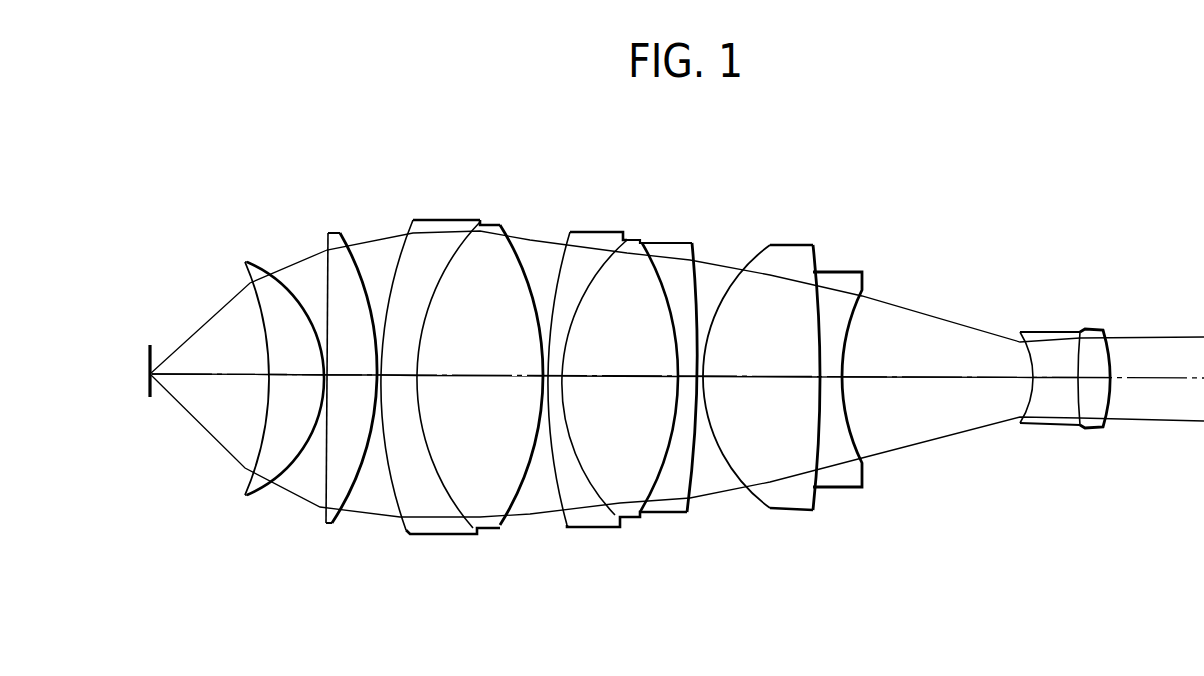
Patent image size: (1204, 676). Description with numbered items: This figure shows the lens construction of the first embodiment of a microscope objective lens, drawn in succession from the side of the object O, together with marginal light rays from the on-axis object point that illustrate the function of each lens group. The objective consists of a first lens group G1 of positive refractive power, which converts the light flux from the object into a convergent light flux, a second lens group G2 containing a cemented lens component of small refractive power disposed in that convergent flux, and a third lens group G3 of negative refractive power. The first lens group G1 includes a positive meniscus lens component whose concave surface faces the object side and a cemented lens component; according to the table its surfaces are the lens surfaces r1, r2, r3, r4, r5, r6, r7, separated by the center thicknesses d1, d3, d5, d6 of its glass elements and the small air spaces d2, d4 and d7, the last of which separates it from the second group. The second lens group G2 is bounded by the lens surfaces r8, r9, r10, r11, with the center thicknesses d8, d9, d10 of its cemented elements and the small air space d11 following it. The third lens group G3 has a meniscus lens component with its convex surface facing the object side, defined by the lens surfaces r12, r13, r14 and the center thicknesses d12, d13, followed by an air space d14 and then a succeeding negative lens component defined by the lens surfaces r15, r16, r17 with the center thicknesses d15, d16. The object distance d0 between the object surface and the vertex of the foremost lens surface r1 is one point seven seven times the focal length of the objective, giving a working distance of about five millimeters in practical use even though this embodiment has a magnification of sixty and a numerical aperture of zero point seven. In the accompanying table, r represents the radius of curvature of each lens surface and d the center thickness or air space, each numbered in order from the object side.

The object O is at (148, 380).
The first lens group G1 is at (228, 213).
The second lens group G2 is at (705, 216).
The third lens group G3 is at (737, 242).
The first lens surface r1 is at (241, 478).
The second lens surface r2 is at (262, 482).
The third lens surface r3 is at (318, 527).
The fourth lens surface r4 is at (344, 525).
The fifth lens surface r5 is at (406, 535).
The sixth lens surface r6 is at (470, 532).
The seventh lens surface r7 is at (510, 530).
The eighth lens surface r8 is at (567, 530).
The ninth lens surface r9 is at (612, 519).
The tenth lens surface r10 is at (645, 516).
The eleventh lens surface r11 is at (691, 516).
The twelfth lens surface r12 is at (768, 513).
The thirteenth lens surface r13 is at (812, 513).
The fourteenth lens surface r14 is at (852, 490).
The fifteenth lens surface r15 is at (1024, 410).
The sixteenth lens surface r16 is at (1080, 416).
The seventeenth lens surface r17 is at (1108, 414).
The object distance d0 is at (210, 362).
The center thickness of first lens d1 is at (296, 362).
The air space between first and second lenses d2 is at (324, 380).
The center thickness of second lens d3 is at (352, 362).
The air space between second lens and cemented component d4 is at (378, 382).
The center thickness of first cemented element d5 is at (399, 363).
The center thickness of second cemented element d6 is at (480, 363).
The air space between first and second lens groups d7 is at (541, 380).
The center thickness of first element of second group d8 is at (556, 380).
The center thickness of middle element of second group d9 is at (620, 363).
The center thickness of last element of second group d10 is at (688, 382).
The air space between second and third lens groups d11 is at (702, 381).
The center thickness of first element of meniscus component d12 is at (761, 363).
The center thickness of second element of meniscus component d13 is at (822, 381).
The air space within third lens group d14 is at (937, 364).
The center thickness of first element of negative component d15 is at (1054, 364).
The center thickness of last element of negative component d16 is at (1096, 377).